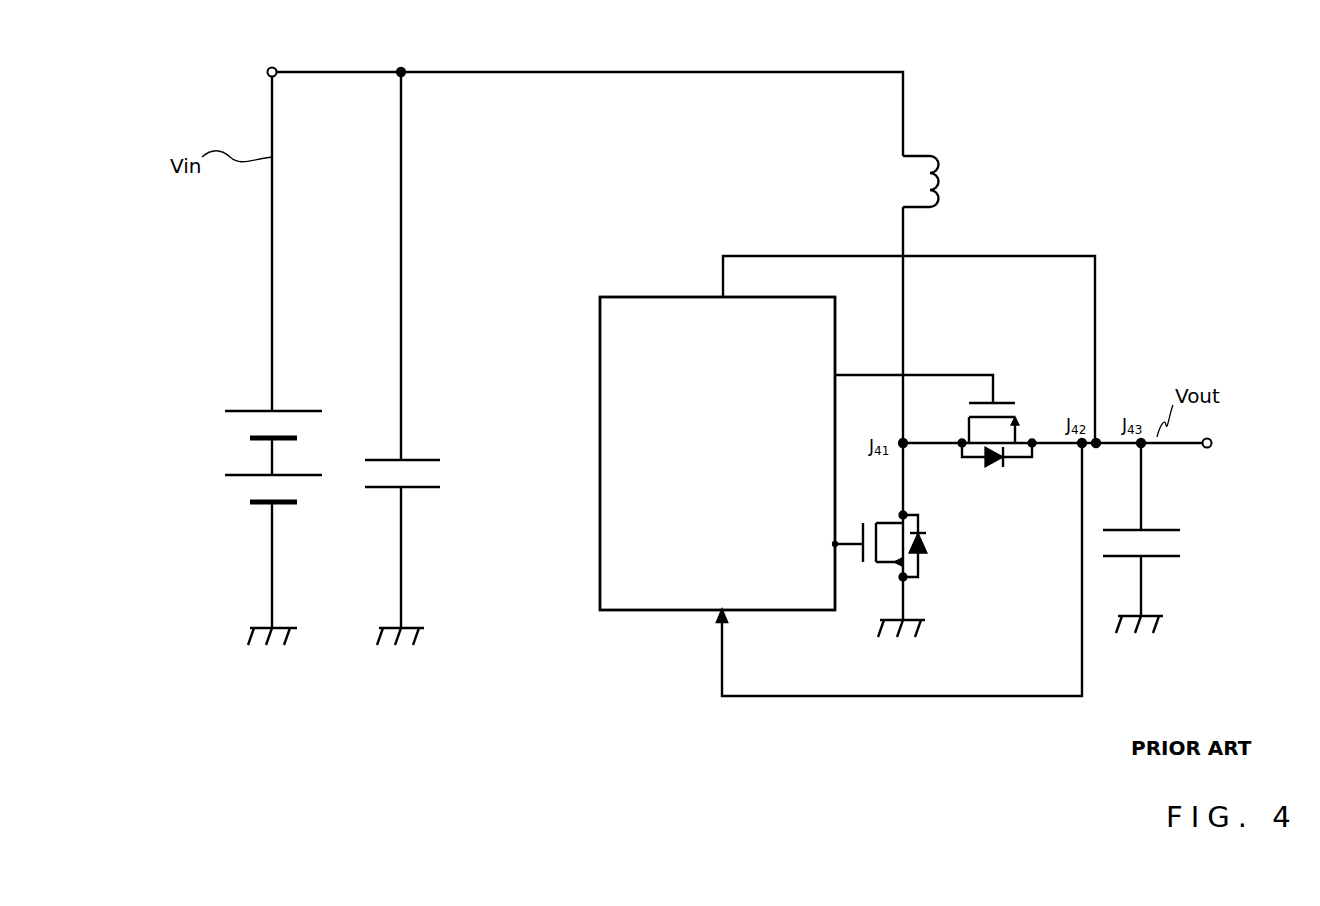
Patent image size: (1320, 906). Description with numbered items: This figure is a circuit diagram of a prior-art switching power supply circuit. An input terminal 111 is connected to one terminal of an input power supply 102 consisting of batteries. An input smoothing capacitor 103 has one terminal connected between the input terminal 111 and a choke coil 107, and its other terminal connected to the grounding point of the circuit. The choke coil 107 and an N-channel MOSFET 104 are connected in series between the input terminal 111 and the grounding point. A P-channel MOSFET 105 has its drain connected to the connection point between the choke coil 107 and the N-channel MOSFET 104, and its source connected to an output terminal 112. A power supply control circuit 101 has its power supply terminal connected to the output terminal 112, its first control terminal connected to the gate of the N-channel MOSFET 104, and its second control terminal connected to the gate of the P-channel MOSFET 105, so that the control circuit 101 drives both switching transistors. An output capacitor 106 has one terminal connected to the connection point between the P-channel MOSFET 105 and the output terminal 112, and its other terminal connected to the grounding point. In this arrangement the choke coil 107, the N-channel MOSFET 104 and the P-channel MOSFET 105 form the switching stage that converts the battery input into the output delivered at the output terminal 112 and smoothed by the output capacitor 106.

The power supply control circuit 101 is at (598, 612).
The input power supply 102 is at (242, 507).
The input smoothing capacitor 103 is at (382, 497).
The N-channel MOSFET 104 is at (925, 580).
The P-channel MOSFET 105 is at (1022, 405).
The output capacitor 106 is at (1160, 565).
The choke coil 107 is at (942, 185).
The input terminal 111 is at (277, 66).
The output terminal 112 is at (1213, 440).